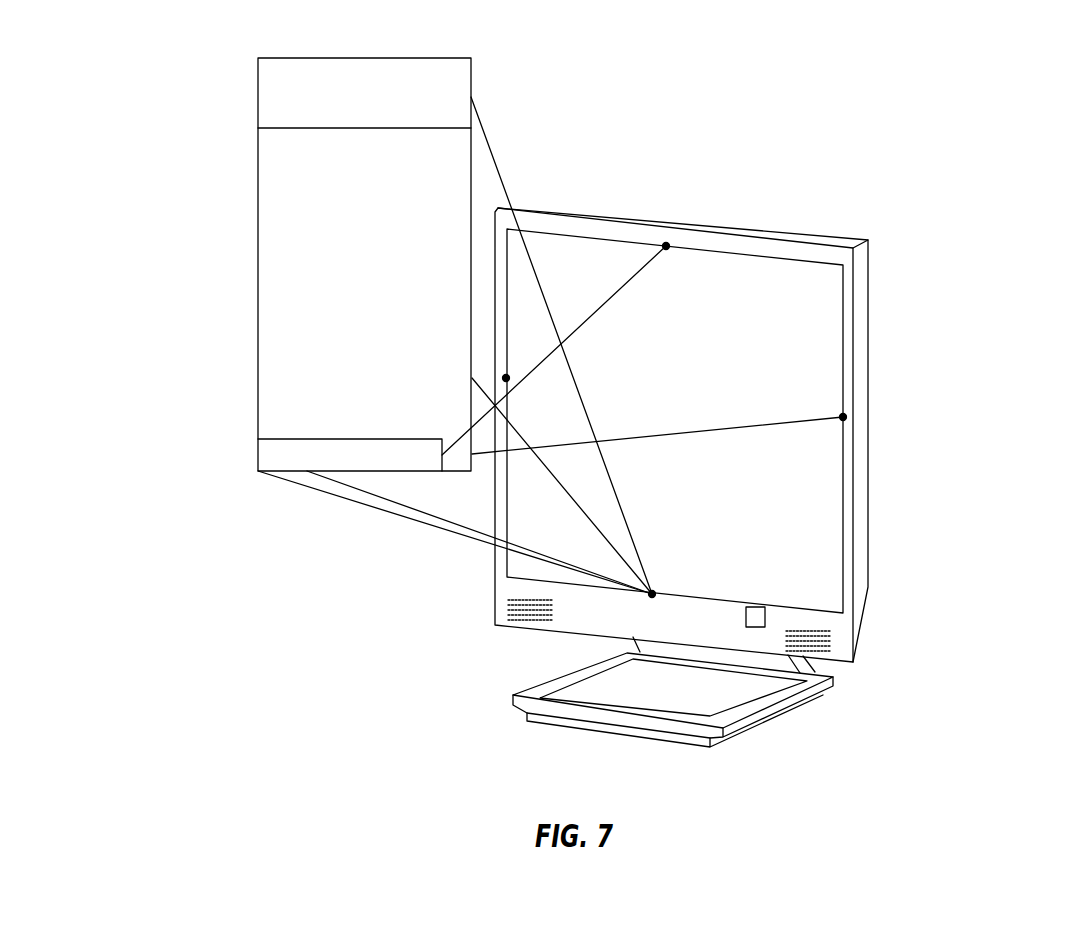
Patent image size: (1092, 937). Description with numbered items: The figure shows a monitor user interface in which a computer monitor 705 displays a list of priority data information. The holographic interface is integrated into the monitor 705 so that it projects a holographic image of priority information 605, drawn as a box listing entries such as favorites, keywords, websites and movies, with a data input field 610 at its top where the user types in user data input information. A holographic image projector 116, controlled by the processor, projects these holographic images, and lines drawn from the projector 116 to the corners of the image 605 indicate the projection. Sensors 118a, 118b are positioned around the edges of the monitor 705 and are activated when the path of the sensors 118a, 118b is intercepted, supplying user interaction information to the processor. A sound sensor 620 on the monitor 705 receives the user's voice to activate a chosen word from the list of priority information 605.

The holographic image of priority information 605 is at (258, 253).
The data input field 610 is at (437, 57).
The sensor 118a is at (692, 397).
The sensor 118b is at (473, 673).
The computer monitor 705 is at (830, 337).
The holographic image projector 116 is at (652, 594).
The sound sensor 620 is at (767, 616).